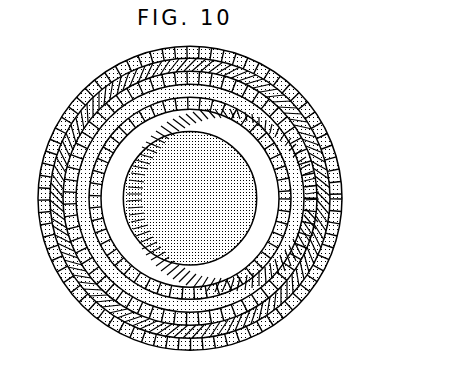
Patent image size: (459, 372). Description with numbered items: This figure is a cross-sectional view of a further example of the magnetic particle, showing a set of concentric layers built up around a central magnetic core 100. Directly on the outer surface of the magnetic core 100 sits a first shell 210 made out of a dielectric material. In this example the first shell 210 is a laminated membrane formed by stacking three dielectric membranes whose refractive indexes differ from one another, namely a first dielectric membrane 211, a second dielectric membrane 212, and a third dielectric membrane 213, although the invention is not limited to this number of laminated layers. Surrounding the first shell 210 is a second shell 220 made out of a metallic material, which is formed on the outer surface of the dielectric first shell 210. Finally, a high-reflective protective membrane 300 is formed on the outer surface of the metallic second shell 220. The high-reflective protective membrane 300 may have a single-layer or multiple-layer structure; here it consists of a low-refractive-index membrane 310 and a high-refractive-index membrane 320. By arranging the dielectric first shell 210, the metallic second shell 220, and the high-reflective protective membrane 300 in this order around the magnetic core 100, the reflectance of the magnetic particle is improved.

The magnetic core 100 is at (244, 168).
The first shell 210 is at (240, 198).
The first dielectric membrane 211 is at (322, 180).
The second dielectric membrane 212 is at (338, 197).
The third dielectric membrane 213 is at (380, 153).
The second shell 220 is at (331, 238).
The high-reflective protective membrane 300 is at (225, 198).
The low-refractive-index membrane 310 is at (328, 262).
The high-refractive-index membrane 320 is at (318, 287).